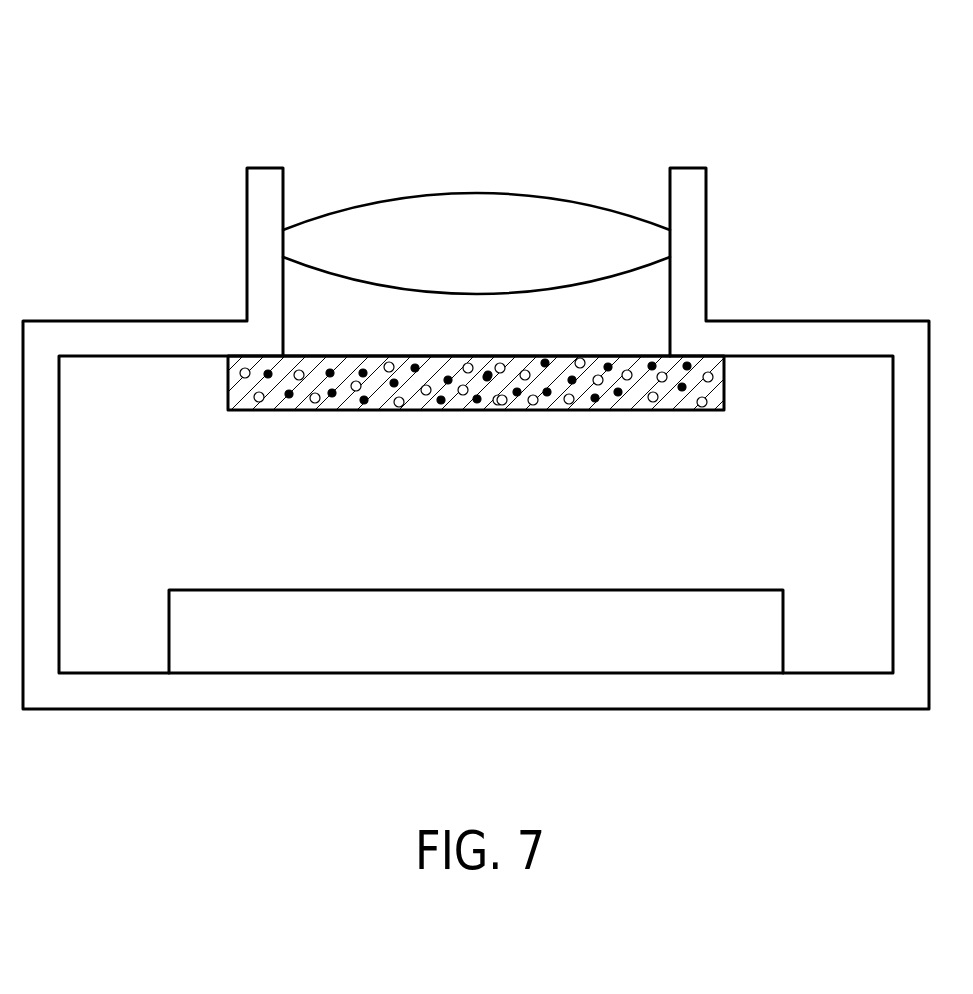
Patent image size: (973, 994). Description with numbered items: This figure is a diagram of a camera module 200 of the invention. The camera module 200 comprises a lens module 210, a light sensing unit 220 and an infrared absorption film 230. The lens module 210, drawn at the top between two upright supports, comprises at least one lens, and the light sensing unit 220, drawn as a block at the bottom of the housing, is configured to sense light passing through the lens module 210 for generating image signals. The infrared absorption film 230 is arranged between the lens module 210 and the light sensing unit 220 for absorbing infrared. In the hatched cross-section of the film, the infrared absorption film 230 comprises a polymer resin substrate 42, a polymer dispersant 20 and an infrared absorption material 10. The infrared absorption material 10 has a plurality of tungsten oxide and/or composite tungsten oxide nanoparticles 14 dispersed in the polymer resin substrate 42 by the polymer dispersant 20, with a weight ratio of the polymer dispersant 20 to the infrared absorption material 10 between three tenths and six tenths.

The camera module 200 is at (833, 120).
The lens module 210 is at (539, 170).
The light sensing unit 220 is at (703, 607).
The infrared absorption film 230 is at (734, 390).
The polymer resin substrate 42 is at (452, 408).
The polymer dispersant 20 is at (312, 402).
The tungsten oxide and/or composite tungsten oxide nanoparticles 14 is at (547, 395).
The infrared absorption material 10 is at (623, 399).